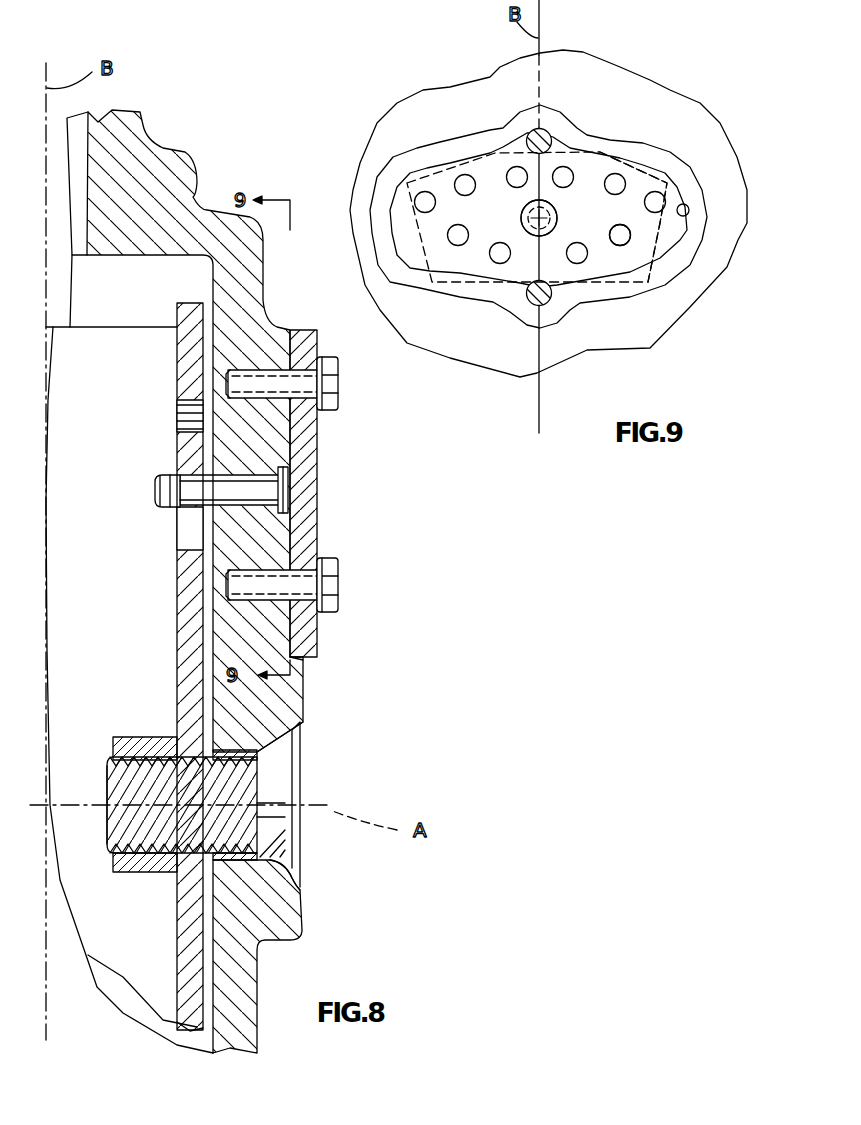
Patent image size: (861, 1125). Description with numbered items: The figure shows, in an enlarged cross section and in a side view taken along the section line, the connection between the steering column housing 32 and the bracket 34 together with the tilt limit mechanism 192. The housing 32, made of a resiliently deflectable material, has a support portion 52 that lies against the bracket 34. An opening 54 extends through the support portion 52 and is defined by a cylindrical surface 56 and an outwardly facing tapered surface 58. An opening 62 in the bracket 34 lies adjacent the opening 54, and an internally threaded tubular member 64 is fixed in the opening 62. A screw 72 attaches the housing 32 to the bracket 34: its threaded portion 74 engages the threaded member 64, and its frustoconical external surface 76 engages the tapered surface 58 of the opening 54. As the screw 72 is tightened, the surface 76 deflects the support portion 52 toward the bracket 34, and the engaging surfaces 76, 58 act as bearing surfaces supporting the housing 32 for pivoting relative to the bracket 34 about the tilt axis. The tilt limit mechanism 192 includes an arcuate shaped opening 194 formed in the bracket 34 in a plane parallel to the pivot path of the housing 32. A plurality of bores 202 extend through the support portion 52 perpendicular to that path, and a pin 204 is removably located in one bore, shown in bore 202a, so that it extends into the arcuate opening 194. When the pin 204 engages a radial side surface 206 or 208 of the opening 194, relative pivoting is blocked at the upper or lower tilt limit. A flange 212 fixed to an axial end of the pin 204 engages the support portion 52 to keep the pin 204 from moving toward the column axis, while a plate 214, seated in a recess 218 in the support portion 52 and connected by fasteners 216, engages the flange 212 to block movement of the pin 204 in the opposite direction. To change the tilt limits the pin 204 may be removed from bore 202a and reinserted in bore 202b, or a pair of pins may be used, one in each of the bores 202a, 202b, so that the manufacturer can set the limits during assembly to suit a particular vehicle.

In FIG. 8, the housing 32 is at (182, 143).
In FIG. 9, the housing 32 is at (459, 71).
In FIG. 8, the bracket 34 is at (188, 989).
In FIG. 8, the support portion 52 is at (240, 978).
In FIG. 8, the opening 54 is at (242, 761).
In FIG. 8, the cylindrical surface 56 is at (254, 847).
In FIG. 8, the tapered surface 58 is at (300, 728).
In FIG. 8, the opening 62 is at (177, 750).
In FIG. 8, the internally threaded tubular member 64 is at (130, 742).
In FIG. 8, the screw 72 is at (310, 771).
In FIG. 8, the threaded portion 74 is at (137, 827).
In FIG. 8, the frustoconical external surface 76 is at (300, 897).
In FIG. 8, the tilt limit mechanism 192 is at (166, 459).
In FIG. 9, the tilt limit mechanism 192 is at (599, 125).
In FIG. 8, the arcuate shaped opening 194 is at (200, 552).
In FIG. 9, the arcuate shaped opening 194 is at (577, 164).
In FIG. 9, the bores 202 is at (462, 232).
In FIG. 8, the bore 202a is at (208, 497).
In FIG. 9, the bore 202a is at (530, 235).
In FIG. 9, the bore 202b is at (630, 245).
In FIG. 8, the pin 204 is at (202, 461).
In FIG. 9, the radial side surface 206 is at (432, 282).
In FIG. 9, the radial side surface 208 is at (655, 240).
In FIG. 8, the flange 212 is at (293, 489).
In FIG. 8, the plate 214 is at (303, 342).
In FIG. 8, the fasteners 216 is at (332, 385).
In FIG. 9, the fasteners 216 is at (553, 130).
In FIG. 8, the recess 218 is at (305, 658).
In FIG. 9, the recess 218 is at (686, 205).